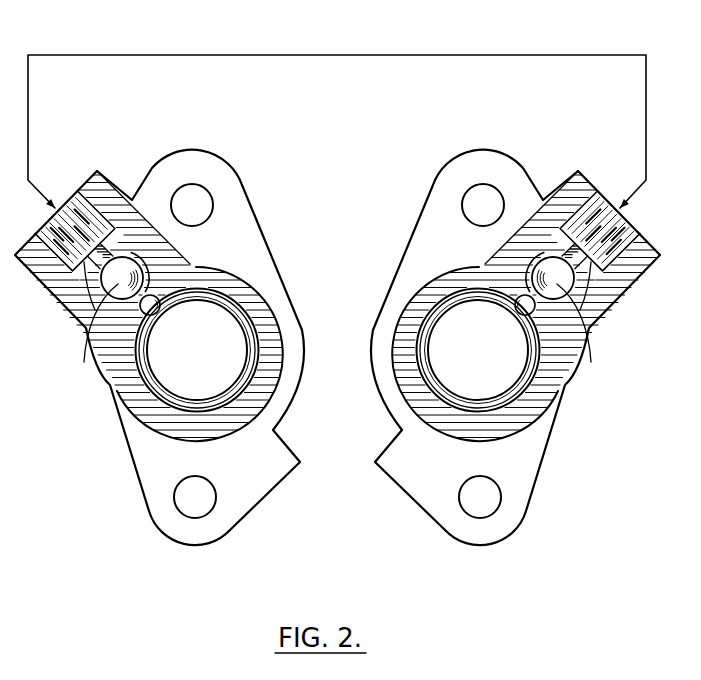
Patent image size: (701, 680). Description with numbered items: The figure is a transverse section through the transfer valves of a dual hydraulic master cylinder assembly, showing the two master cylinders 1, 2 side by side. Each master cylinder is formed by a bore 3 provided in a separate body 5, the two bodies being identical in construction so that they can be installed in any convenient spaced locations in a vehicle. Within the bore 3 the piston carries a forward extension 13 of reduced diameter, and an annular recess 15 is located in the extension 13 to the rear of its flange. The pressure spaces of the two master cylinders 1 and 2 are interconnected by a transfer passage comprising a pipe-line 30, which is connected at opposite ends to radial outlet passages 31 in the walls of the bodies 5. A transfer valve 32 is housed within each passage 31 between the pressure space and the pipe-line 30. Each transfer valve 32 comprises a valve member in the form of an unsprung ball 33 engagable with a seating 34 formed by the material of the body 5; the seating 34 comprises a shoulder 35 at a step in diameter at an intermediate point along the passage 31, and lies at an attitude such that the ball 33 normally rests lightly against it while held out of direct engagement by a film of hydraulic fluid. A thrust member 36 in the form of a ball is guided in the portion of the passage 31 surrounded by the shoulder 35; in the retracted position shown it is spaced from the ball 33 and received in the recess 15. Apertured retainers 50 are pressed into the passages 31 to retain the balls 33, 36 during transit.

The master cylinder 1 is at (249, 245).
The master cylinder 2 is at (440, 198).
The bore 3 is at (147, 396).
The body 5 is at (241, 287).
The forward extension 13 is at (221, 370).
The annular recess 15 is at (150, 380).
The pipe-line 30 is at (343, 55).
The radial outlet passage 31 is at (115, 196).
The transfer valve 32 is at (128, 273).
The ball 33 is at (86, 342).
The seating 34 is at (150, 280).
The shoulder 35 is at (195, 292).
The thrust member 36 is at (152, 316).
The apertured retainer 50 is at (80, 312).